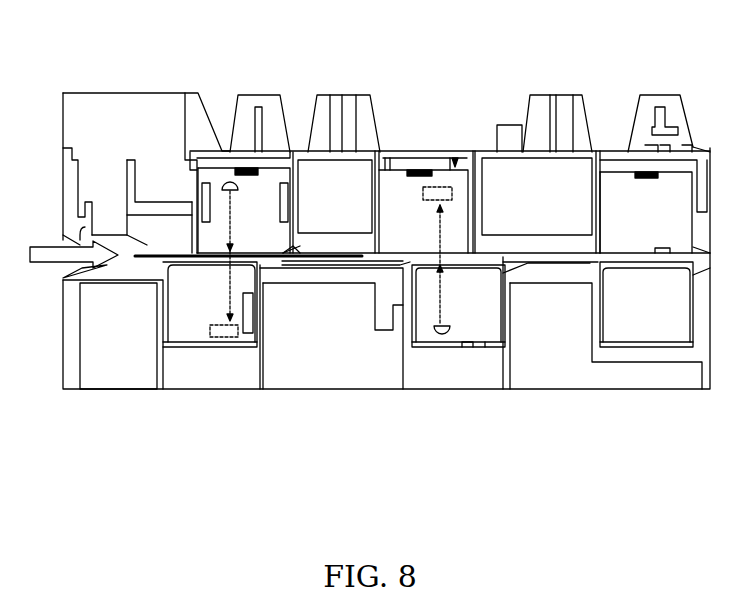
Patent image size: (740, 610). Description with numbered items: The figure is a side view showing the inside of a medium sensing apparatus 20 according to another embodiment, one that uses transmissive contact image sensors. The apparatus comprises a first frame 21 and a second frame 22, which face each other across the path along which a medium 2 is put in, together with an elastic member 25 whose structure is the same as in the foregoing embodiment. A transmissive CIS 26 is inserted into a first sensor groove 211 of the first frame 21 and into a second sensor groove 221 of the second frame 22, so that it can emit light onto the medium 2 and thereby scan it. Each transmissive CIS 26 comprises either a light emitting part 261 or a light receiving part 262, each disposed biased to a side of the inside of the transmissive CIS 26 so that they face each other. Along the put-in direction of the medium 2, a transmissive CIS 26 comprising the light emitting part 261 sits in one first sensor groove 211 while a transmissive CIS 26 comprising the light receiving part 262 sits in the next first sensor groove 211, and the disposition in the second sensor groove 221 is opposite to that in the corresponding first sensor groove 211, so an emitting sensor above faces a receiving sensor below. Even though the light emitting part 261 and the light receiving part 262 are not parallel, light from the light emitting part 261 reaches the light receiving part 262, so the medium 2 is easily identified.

The medium sensing apparatus 20 is at (662, 57).
The first frame 21 is at (165, 108).
The second frame 22 is at (133, 362).
The elastic member 25 is at (245, 165).
The transmissive CIS 26 is at (387, 190).
The light receiving part 262 is at (432, 188).
The light emitting part 261 is at (437, 334).
The first sensor groove 211 is at (455, 157).
The second sensor groove 221 is at (462, 352).
The medium 2 is at (278, 260).